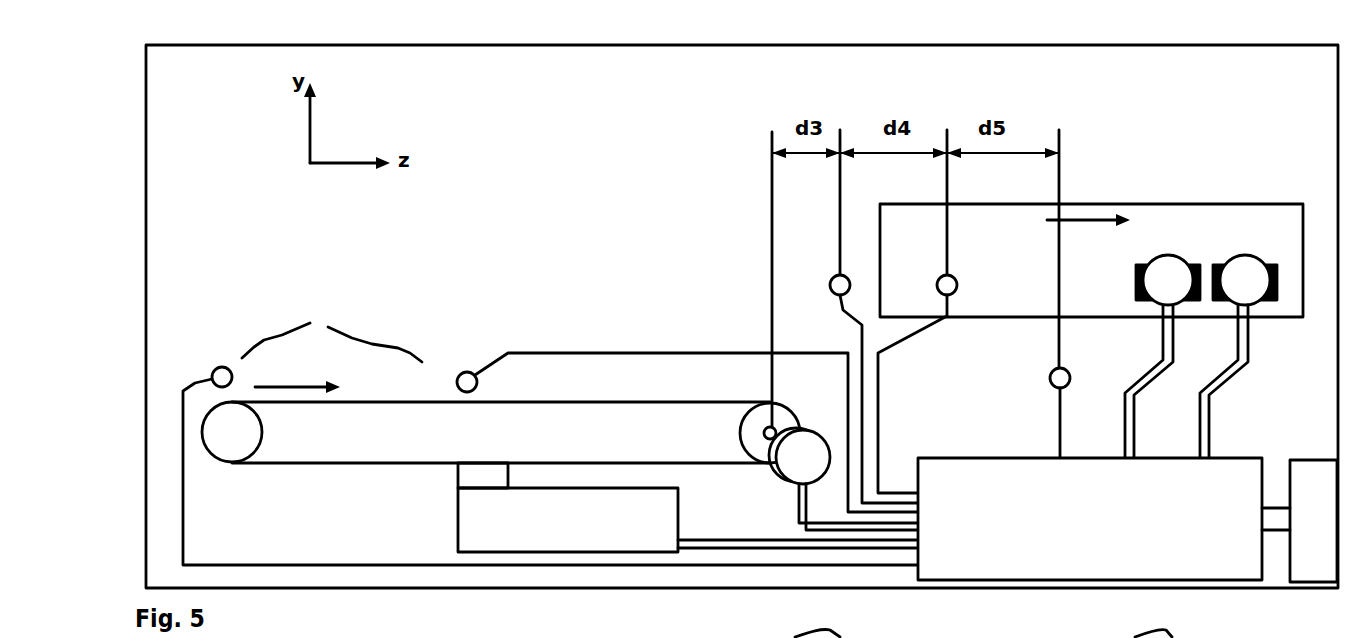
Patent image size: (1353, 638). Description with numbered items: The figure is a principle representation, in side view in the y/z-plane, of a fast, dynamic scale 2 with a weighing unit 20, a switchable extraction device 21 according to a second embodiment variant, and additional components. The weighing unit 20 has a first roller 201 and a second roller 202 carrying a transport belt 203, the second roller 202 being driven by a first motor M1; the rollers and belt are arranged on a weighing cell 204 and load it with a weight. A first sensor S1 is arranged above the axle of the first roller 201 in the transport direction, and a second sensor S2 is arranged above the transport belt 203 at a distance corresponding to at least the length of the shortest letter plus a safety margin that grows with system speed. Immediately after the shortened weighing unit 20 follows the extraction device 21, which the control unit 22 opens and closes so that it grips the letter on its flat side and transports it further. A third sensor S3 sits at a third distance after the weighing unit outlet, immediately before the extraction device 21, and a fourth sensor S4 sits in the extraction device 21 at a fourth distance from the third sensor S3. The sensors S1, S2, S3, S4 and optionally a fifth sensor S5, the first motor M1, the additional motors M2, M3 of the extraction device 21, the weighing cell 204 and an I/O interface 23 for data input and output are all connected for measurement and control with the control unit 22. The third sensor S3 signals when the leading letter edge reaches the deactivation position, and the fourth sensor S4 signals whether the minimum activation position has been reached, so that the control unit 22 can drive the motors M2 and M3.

The fast, dynamic scale 2 is at (1225, 58).
The weighing unit 20 is at (723, 263).
The extraction device 21 is at (1098, 164).
The control unit 22 is at (981, 462).
The I/O interface 23 is at (1307, 462).
The first roller 201 is at (236, 447).
The second roller 202 is at (778, 410).
The transport belt 203 is at (565, 400).
The weighing cell 204 is at (458, 531).
The first sensor S1 is at (212, 362).
The second sensor S2 is at (678, 428).
The third sensor S3 is at (865, 316).
The fourth sensor S4 is at (917, 311).
The fifth sensor S5 is at (1050, 294).
The first motor M1 is at (800, 470).
The second motor M2 is at (1162, 356).
The third motor M3 is at (1238, 356).